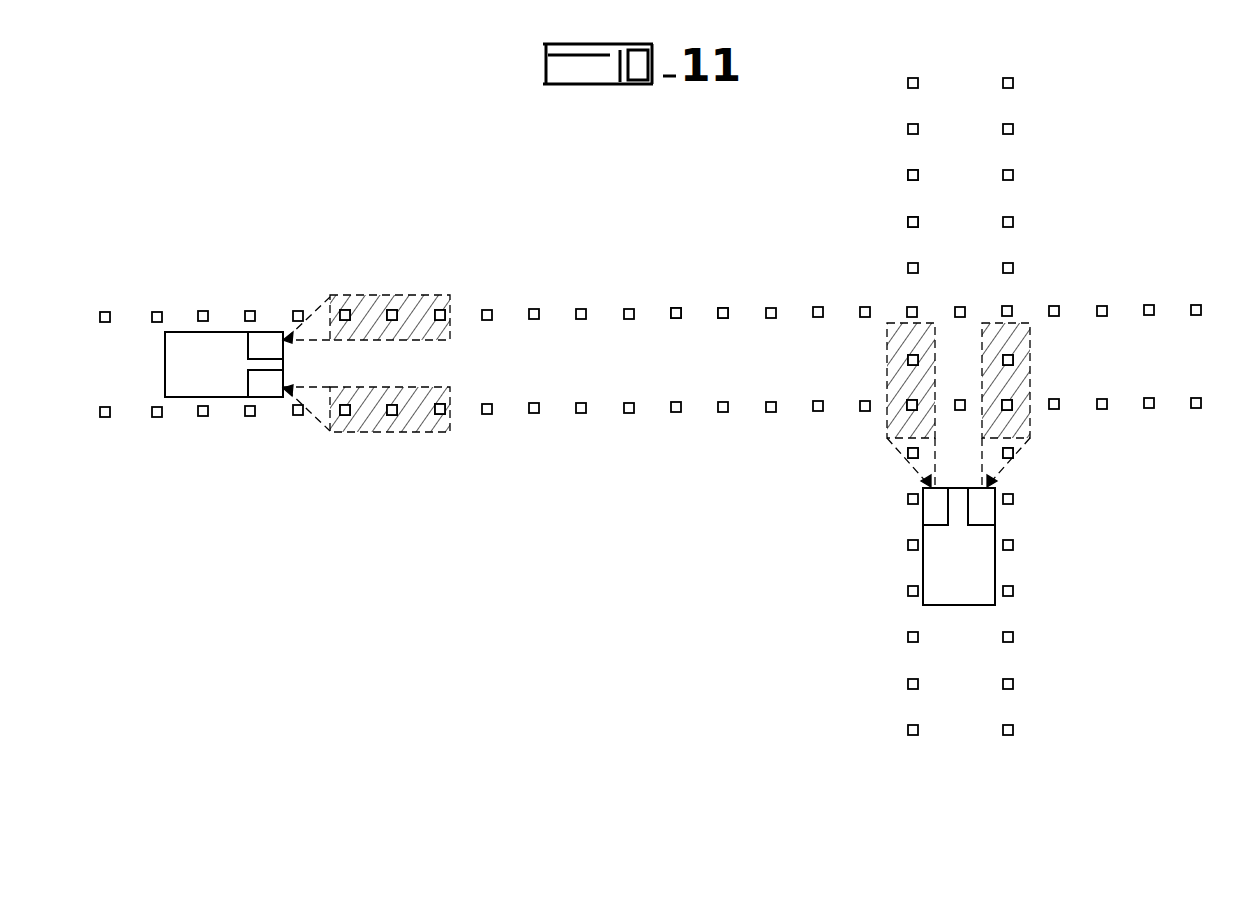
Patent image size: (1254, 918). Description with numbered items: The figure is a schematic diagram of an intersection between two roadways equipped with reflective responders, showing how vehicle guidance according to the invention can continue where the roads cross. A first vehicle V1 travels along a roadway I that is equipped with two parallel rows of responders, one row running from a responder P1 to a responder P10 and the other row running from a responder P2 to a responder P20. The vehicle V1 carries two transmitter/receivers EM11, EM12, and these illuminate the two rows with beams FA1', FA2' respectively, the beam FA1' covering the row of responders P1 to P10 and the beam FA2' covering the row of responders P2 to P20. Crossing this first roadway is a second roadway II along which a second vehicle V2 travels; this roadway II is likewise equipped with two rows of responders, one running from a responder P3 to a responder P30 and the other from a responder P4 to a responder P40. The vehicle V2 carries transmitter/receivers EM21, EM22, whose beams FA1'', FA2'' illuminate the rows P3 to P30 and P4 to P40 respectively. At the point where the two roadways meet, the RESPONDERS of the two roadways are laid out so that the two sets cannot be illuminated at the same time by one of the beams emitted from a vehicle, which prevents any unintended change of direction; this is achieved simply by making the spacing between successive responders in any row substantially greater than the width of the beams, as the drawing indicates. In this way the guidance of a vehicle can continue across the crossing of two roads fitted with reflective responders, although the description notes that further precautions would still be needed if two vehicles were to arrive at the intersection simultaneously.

The responder P1 is at (605, 315).
The responder P2 is at (605, 410).
The responder P10 is at (1218, 307).
The responder P20 is at (1218, 401).
The responder P30 is at (927, 159).
The responder P40 is at (1018, 159).
The responder P3 is at (921, 569).
The responder P4 is at (1014, 569).
The responders RESPONDERS is at (908, 176).
The roadway I is at (120, 365).
The roadway II is at (954, 671).
The vehicle V1 is at (180, 363).
The vehicle V2 is at (918, 546).
The transmitter/receiver EM11 is at (268, 338).
The transmitter/receiver EM12 is at (270, 395).
The transmitter/receiver EM21 is at (938, 510).
The transmitter/receiver EM22 is at (977, 513).
The beam FA1' is at (366, 294).
The beam FA2' is at (366, 429).
The beam FA1'' is at (878, 405).
The beam FA2'' is at (1041, 405).